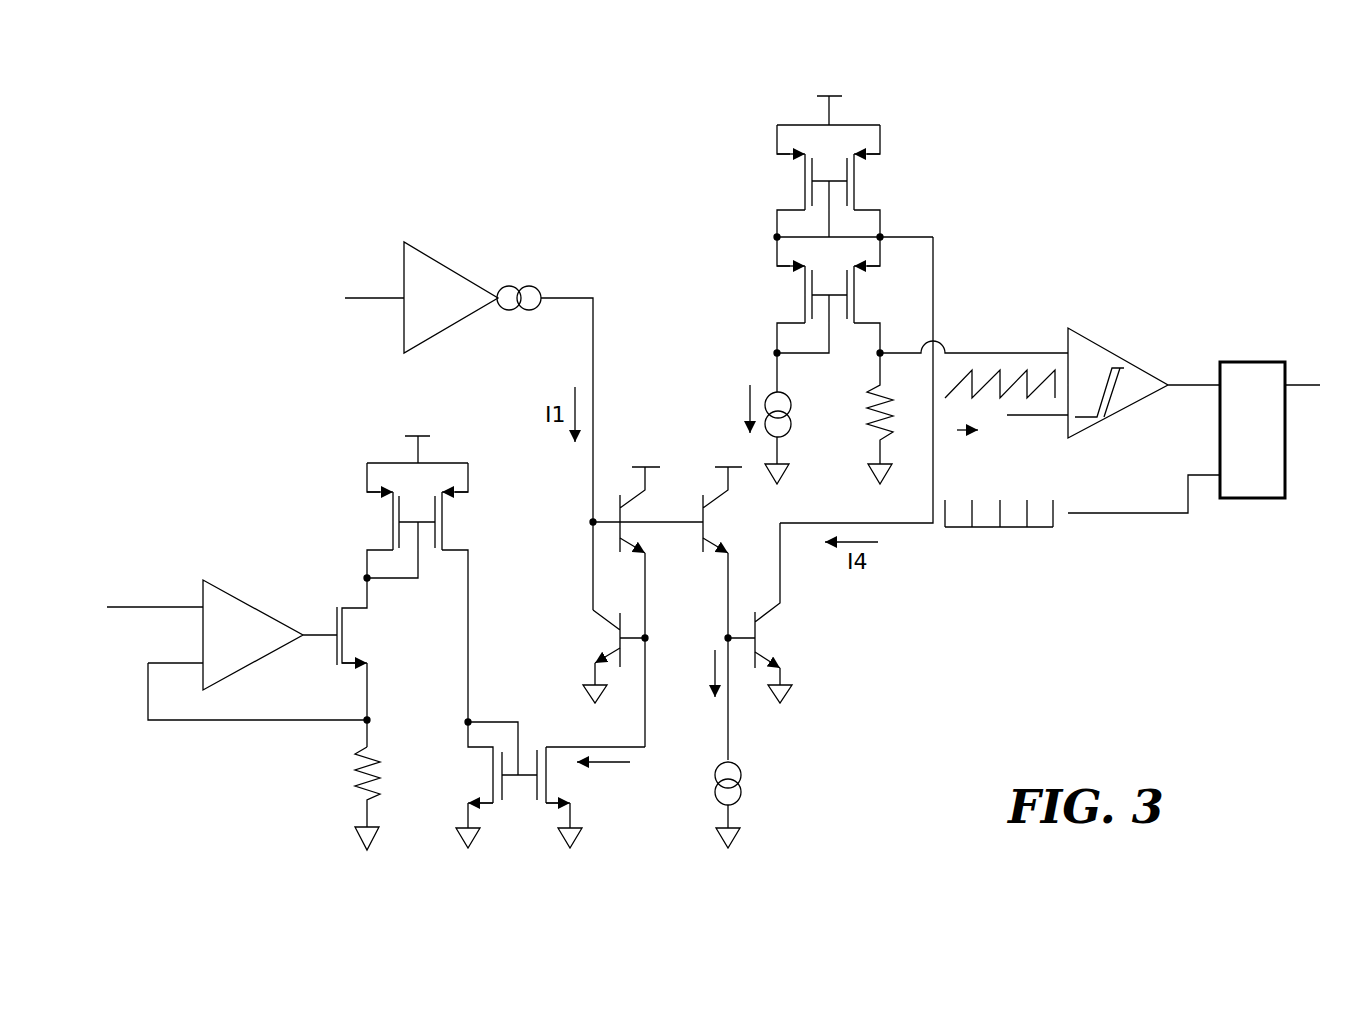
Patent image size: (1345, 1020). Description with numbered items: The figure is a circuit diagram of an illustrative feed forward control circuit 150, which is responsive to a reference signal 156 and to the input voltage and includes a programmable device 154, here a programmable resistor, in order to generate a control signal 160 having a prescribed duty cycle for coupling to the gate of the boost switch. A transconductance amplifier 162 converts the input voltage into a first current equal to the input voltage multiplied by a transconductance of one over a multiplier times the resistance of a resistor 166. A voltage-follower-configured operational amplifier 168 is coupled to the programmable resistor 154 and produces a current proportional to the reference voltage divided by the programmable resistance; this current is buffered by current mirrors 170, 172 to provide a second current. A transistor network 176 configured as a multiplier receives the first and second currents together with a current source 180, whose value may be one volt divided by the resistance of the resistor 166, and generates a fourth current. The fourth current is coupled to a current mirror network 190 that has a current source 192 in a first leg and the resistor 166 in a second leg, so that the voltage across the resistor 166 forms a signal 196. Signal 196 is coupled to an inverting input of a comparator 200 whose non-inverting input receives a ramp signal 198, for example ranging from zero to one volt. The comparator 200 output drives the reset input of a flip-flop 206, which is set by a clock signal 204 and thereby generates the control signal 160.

The feed forward control circuit 150 is at (612, 128).
The programmable device 154 is at (362, 802).
The reference signal 156 is at (130, 607).
The control signal 160 is at (1315, 385).
The transconductance amplifier 162 is at (448, 262).
The resistor 166 is at (870, 386).
The operational amplifier 168 is at (255, 598).
The current mirror 170 is at (340, 520).
The current mirror 172 is at (462, 776).
The transistor network 176 is at (709, 599).
The current source 180 is at (744, 778).
The current mirror network 190 is at (894, 179).
The current source 192 is at (790, 419).
The signal 196 is at (1027, 351).
The ramp signal 198 is at (1028, 417).
The comparator 200 is at (1123, 355).
The clock signal 204 is at (1118, 515).
The flip-flop 206 is at (1273, 446).